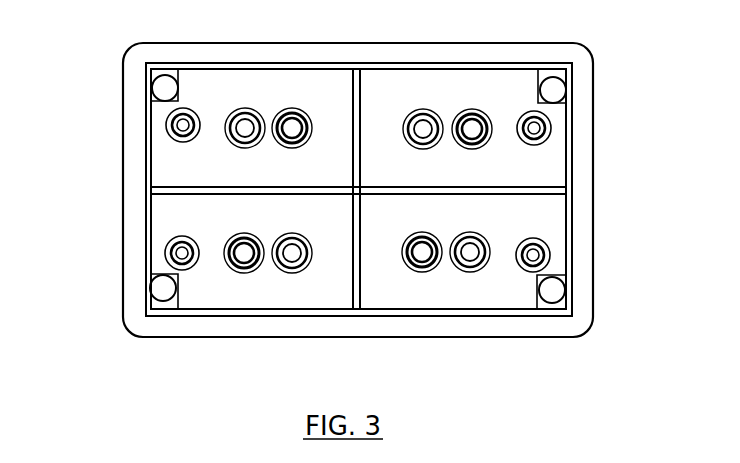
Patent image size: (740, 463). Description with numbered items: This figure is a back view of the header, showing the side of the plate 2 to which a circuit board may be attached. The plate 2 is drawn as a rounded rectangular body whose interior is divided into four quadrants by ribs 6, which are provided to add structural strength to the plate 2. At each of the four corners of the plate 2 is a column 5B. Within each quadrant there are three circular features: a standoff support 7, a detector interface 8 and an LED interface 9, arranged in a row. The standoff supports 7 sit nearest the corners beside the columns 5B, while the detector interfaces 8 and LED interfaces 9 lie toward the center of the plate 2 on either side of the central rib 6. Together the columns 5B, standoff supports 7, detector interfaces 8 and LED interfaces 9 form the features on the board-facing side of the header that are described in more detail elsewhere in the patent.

The plate 2 is at (583, 227).
The columns 5B is at (155, 89).
The ribs 6 is at (350, 102).
The standoff supports 7 is at (172, 139).
The detector interfaces 8 is at (242, 108).
The LED interfaces 9 is at (290, 108).